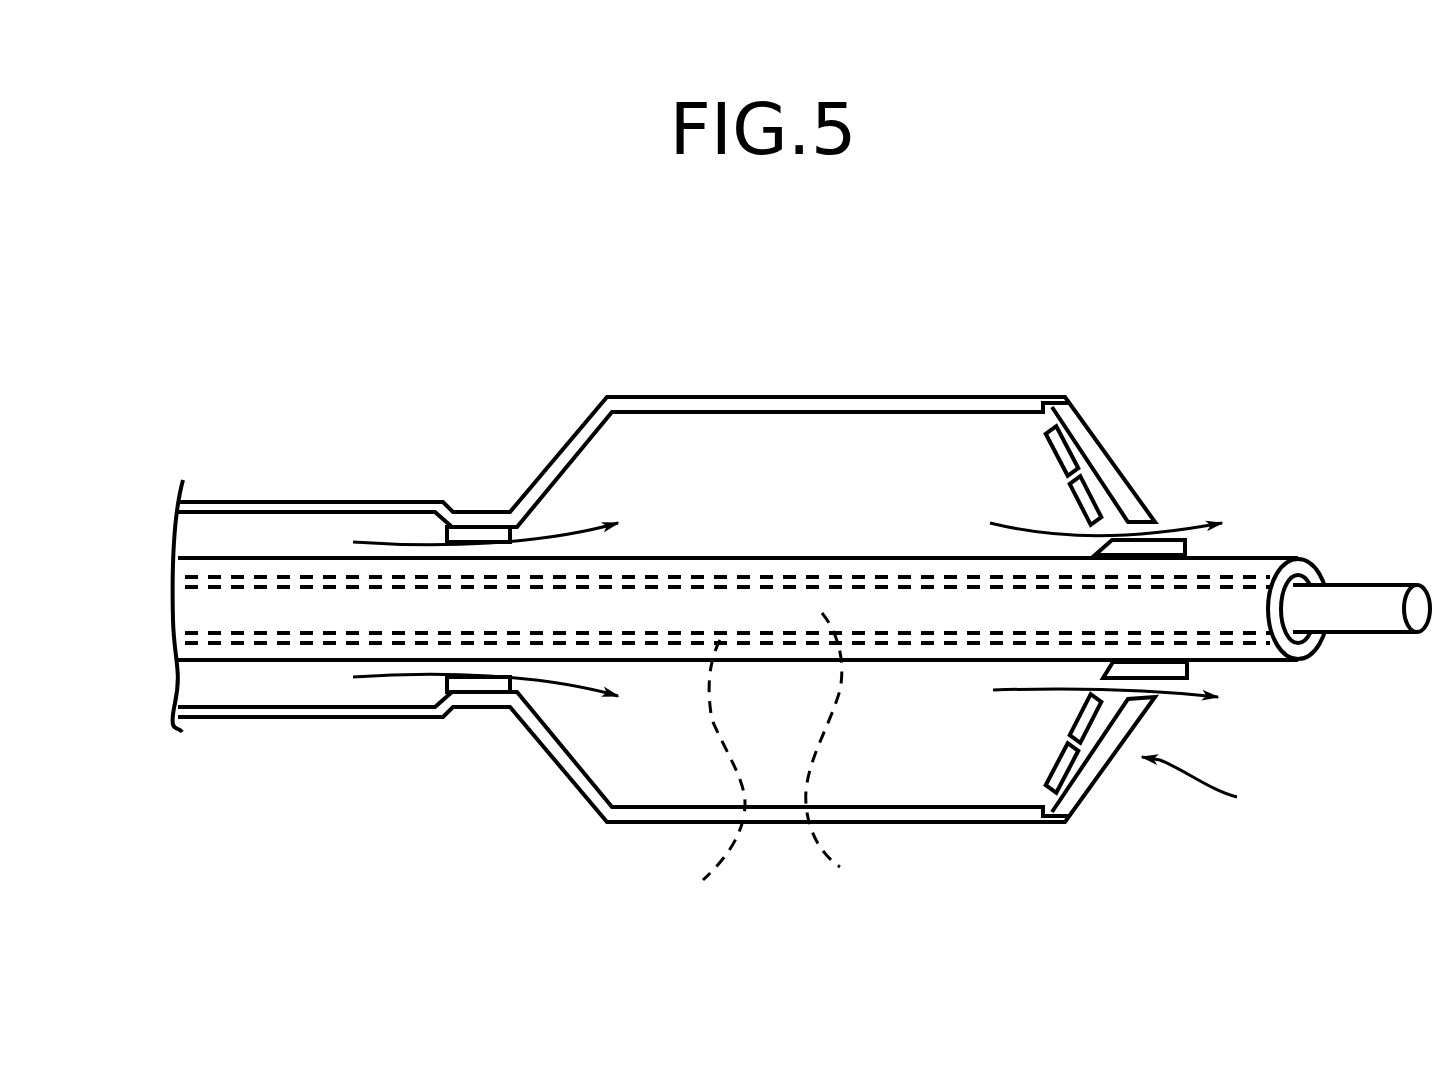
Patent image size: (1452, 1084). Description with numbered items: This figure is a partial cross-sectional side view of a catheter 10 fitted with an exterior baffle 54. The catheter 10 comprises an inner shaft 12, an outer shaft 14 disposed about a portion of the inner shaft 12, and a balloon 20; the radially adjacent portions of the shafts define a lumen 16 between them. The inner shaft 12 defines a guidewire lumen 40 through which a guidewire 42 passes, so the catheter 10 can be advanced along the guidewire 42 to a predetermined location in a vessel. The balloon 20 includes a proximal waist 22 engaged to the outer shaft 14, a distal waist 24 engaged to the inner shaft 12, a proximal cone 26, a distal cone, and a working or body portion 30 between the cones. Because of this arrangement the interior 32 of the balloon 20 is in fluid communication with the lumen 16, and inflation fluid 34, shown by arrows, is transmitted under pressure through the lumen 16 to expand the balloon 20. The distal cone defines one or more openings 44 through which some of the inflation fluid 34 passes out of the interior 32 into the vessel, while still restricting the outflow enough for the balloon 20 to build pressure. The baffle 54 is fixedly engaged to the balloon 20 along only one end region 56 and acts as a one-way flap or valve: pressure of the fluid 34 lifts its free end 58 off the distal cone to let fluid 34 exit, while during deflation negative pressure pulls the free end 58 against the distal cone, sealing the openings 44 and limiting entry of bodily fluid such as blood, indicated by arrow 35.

The catheter 10 is at (574, 322).
The inner shaft 12 is at (250, 558).
The outer shaft 14 is at (400, 718).
The lumen 16 is at (250, 688).
The balloon 20 is at (903, 394).
The proximal waist 22 is at (478, 707).
The distal waist 24 is at (1183, 550).
The proximal cone 26 is at (563, 443).
The body portion 30 is at (660, 397).
The interior 32 is at (777, 447).
The inflation fluid 34 is at (383, 541).
The bodily fluid 35 is at (1121, 438).
The guidewire lumen 40 is at (700, 771).
The guidewire 42 is at (845, 748).
The openings 44 is at (1073, 723).
The baffle 54 is at (1091, 797).
The end region 56 is at (1073, 400).
The free end 58 is at (1143, 517).